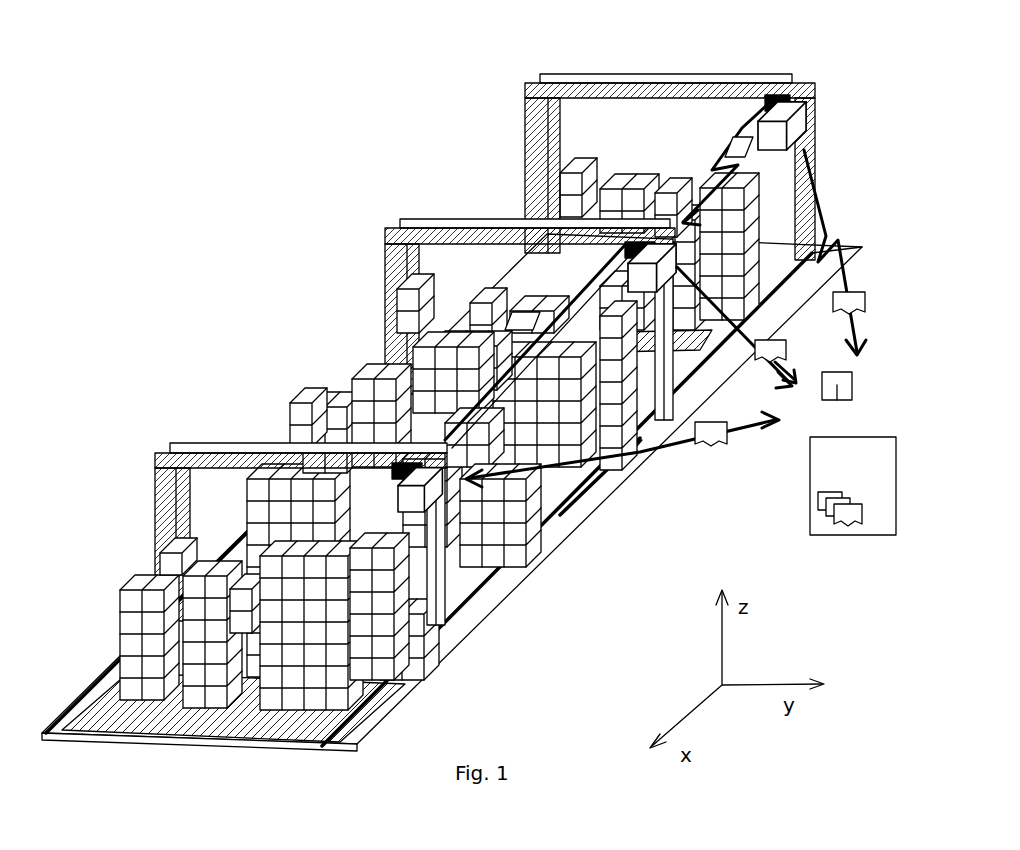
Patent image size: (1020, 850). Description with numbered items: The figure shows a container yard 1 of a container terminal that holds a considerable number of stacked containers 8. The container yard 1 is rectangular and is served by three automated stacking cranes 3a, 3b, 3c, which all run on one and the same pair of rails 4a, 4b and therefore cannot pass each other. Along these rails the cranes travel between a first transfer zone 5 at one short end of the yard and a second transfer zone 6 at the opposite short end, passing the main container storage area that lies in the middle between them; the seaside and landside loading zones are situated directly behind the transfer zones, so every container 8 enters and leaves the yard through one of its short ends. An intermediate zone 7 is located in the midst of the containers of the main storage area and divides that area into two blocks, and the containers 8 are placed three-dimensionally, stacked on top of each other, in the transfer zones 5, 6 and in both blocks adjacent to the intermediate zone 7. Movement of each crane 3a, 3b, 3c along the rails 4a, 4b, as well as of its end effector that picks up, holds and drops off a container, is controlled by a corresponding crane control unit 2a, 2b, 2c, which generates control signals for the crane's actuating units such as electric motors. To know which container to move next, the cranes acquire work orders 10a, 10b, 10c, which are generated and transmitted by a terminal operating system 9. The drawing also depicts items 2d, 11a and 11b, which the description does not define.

The container yard 1 is at (268, 183).
The crane control unit 2a is at (794, 86).
The crane control unit 2b is at (640, 240).
The crane control unit 2c is at (400, 465).
The control unit 2d is at (838, 402).
The automated stacking crane 3a is at (525, 118).
The automated stacking crane 3b is at (385, 266).
The automated stacking crane 3c is at (155, 487).
The rail 4a is at (76, 738).
The rail 4b is at (338, 747).
The first transfer zone 5 is at (727, 365).
The second transfer zone 6 is at (163, 722).
The intermediate zone 7 is at (548, 540).
The container 8 is at (632, 406).
The terminal operating system 9 is at (858, 537).
The work order 10a is at (895, 278).
The work order 10b is at (805, 340).
The work order 10c is at (703, 447).
The first position signal 11a is at (729, 136).
The second position signal 11b is at (530, 326).